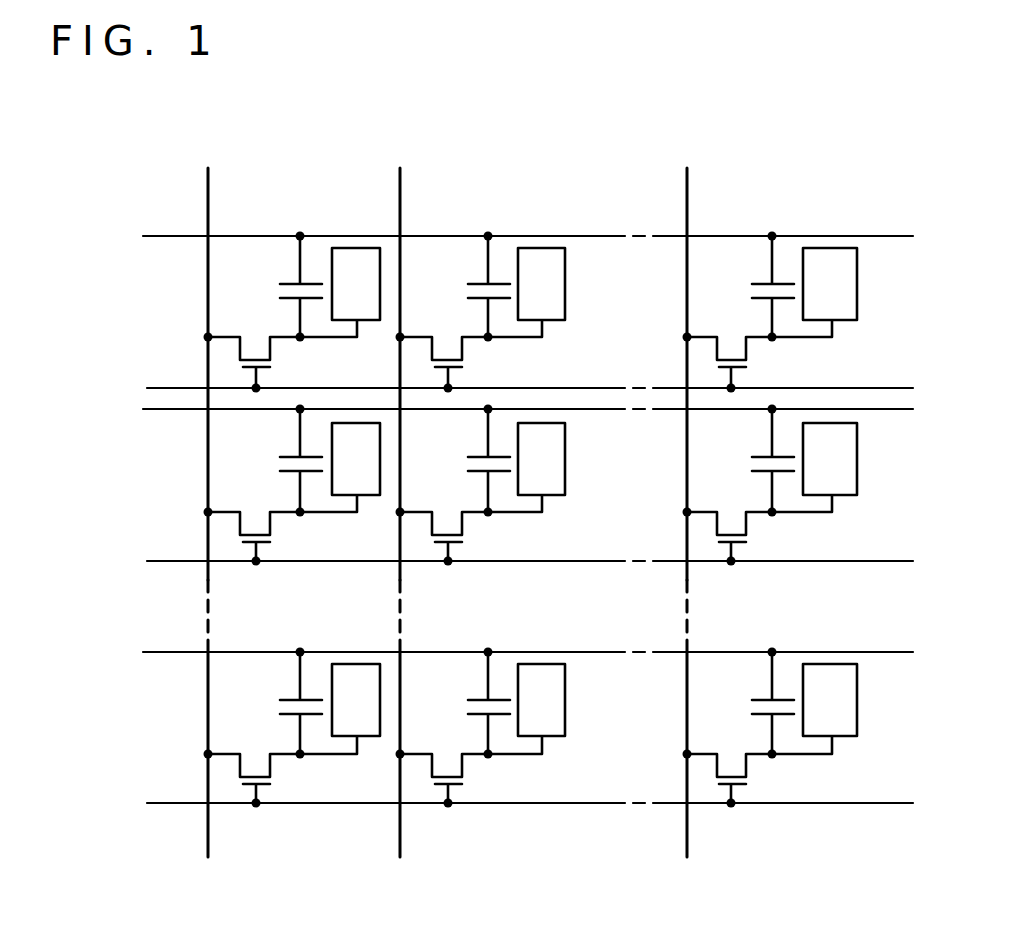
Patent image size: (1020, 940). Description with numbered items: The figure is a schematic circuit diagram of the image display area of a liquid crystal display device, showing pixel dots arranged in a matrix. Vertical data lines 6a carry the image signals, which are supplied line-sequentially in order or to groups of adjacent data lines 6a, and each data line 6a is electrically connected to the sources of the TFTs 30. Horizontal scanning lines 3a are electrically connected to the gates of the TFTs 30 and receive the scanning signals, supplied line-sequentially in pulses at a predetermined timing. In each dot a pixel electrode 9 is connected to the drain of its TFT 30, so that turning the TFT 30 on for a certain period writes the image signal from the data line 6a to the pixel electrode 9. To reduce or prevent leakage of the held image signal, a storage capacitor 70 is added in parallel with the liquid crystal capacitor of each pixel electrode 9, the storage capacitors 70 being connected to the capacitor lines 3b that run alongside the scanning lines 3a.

The data line 6a is at (208, 206).
The capacitor line 3b is at (872, 237).
The scanning line 3a is at (866, 387).
The storage capacitor 70 is at (275, 292).
The pixel electrode 9 is at (557, 322).
The TFT 30 is at (272, 350).